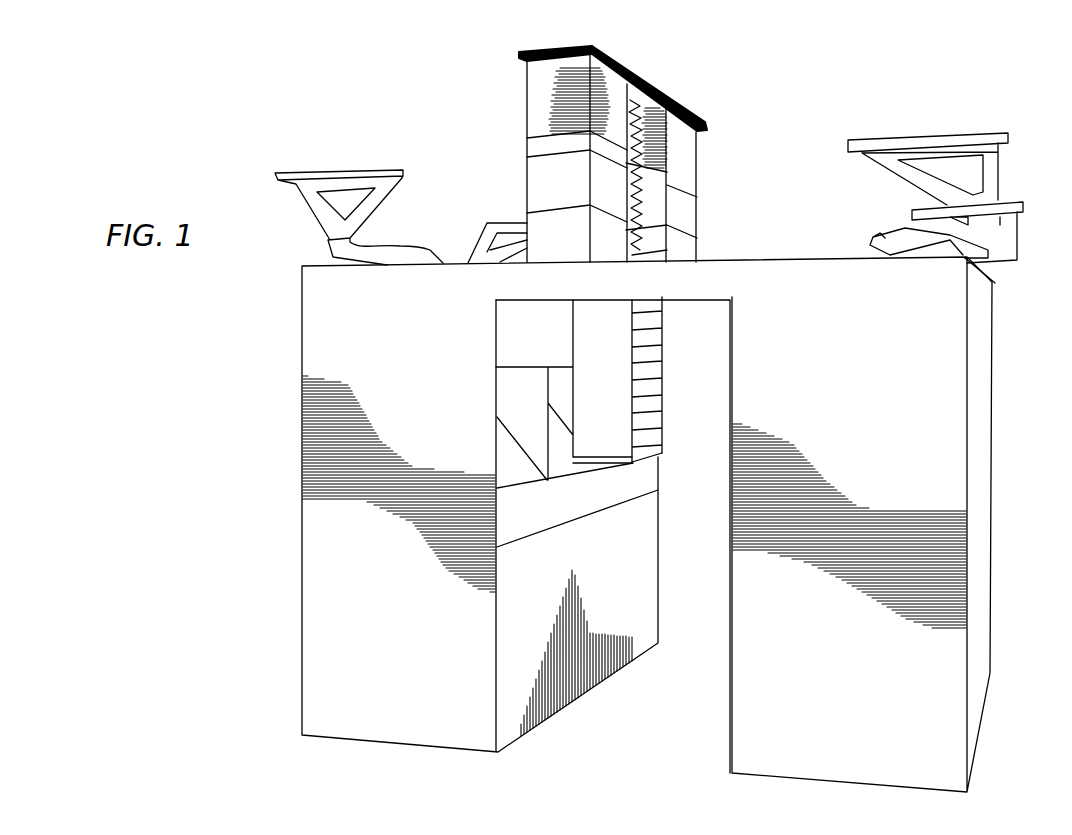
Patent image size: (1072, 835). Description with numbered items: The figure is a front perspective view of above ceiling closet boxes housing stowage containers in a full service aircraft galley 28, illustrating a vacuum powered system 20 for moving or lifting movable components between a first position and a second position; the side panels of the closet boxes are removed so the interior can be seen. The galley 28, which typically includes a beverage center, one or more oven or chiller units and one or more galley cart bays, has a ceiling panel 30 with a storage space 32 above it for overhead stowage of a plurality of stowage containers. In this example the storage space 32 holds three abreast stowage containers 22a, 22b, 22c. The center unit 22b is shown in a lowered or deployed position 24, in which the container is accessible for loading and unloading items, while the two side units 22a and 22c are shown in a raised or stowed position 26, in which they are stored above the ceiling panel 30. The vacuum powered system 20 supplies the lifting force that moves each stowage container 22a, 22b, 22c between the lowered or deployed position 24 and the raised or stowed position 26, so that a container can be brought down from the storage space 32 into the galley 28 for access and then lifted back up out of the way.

The vacuum powered system 20 is at (732, 117).
The stowage container 22a is at (552, 195).
The stowage container 22b is at (613, 412).
The stowage container 22c is at (684, 220).
The lowered or deployed position 24 is at (678, 413).
The raised or stowed position 26 is at (517, 150).
The full service aircraft galley 28 is at (253, 530).
The ceiling panel 30 is at (702, 285).
The storage space 32 is at (732, 150).